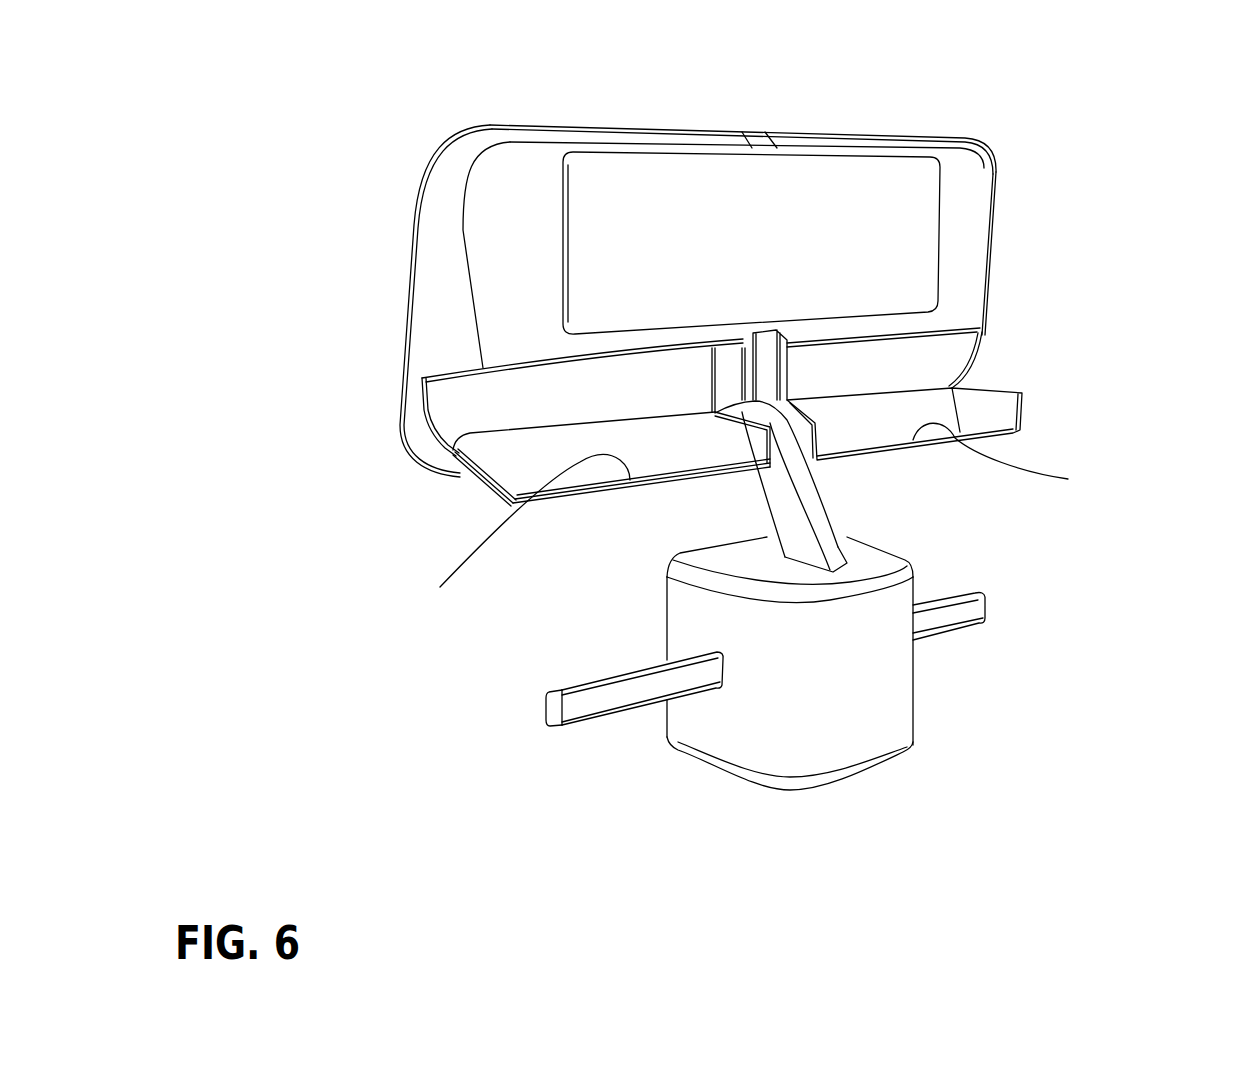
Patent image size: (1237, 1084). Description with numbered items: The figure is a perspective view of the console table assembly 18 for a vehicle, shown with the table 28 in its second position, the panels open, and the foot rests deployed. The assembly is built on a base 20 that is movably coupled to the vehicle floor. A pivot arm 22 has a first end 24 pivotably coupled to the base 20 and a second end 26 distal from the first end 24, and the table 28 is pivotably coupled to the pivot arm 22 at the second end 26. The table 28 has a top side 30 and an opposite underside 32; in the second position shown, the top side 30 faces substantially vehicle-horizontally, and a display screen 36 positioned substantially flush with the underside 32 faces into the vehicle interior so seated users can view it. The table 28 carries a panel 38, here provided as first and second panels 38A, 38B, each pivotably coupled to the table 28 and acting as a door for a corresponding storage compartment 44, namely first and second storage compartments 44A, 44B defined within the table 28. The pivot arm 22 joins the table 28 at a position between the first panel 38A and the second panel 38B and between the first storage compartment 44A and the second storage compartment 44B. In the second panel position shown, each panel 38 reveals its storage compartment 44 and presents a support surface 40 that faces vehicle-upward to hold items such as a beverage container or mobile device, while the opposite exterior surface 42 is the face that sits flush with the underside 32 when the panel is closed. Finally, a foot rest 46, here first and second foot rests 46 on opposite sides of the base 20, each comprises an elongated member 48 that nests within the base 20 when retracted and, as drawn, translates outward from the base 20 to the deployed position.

The console table assembly 18 is at (705, 259).
The base 20 is at (834, 686).
The pivot arm 22 is at (773, 478).
The first end 24 is at (842, 544).
The second end 26 is at (745, 403).
The table 28 is at (970, 222).
The top side 30 is at (408, 262).
The underside 32 is at (960, 282).
The display screen 36 is at (797, 183).
The panel 38 is at (772, 495).
The first panel 38A is at (490, 453).
The second panel 38B is at (975, 397).
The support surface 40 is at (523, 533).
The exterior surface 42 is at (597, 493).
The storage compartment 44 is at (703, 390).
The first storage compartment 44A is at (457, 402).
The second storage compartment 44B is at (915, 362).
The foot rest 46 is at (813, 702).
The elongated member 48 is at (612, 698).